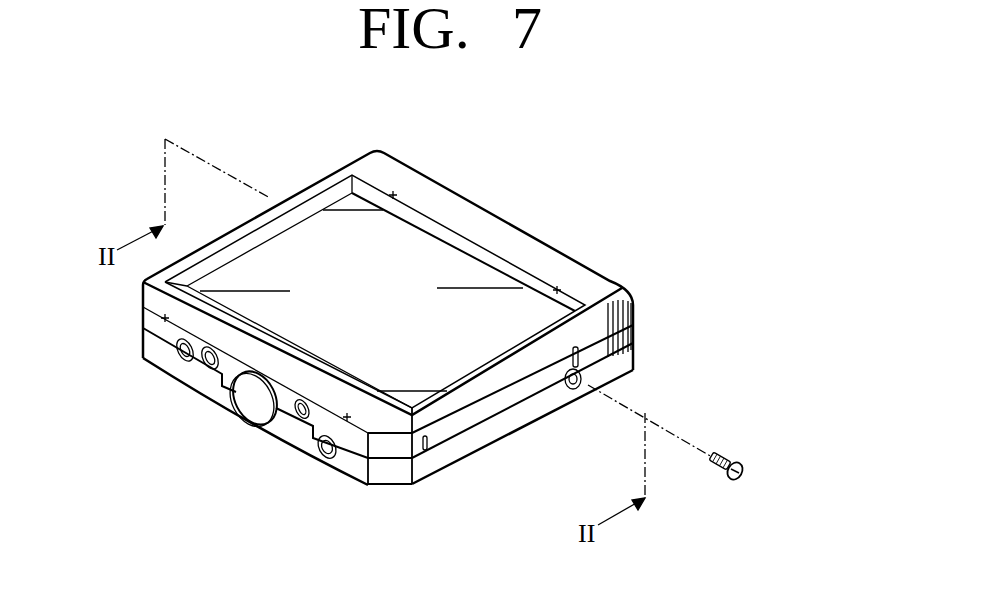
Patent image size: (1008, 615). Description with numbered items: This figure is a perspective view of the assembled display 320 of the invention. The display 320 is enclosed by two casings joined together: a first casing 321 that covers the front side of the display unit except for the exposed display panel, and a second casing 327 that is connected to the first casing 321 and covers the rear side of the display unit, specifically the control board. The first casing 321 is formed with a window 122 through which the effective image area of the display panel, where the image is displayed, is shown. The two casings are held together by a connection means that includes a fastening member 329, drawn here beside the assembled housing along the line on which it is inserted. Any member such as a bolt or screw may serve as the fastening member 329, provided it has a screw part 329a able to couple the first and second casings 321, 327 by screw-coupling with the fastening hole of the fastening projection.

The display 320 is at (545, 157).
The first casing 321 is at (530, 253).
The window 122 is at (367, 327).
The second casing 327 is at (227, 405).
The fastening member 329 is at (745, 468).
The screw part 329a is at (718, 447).